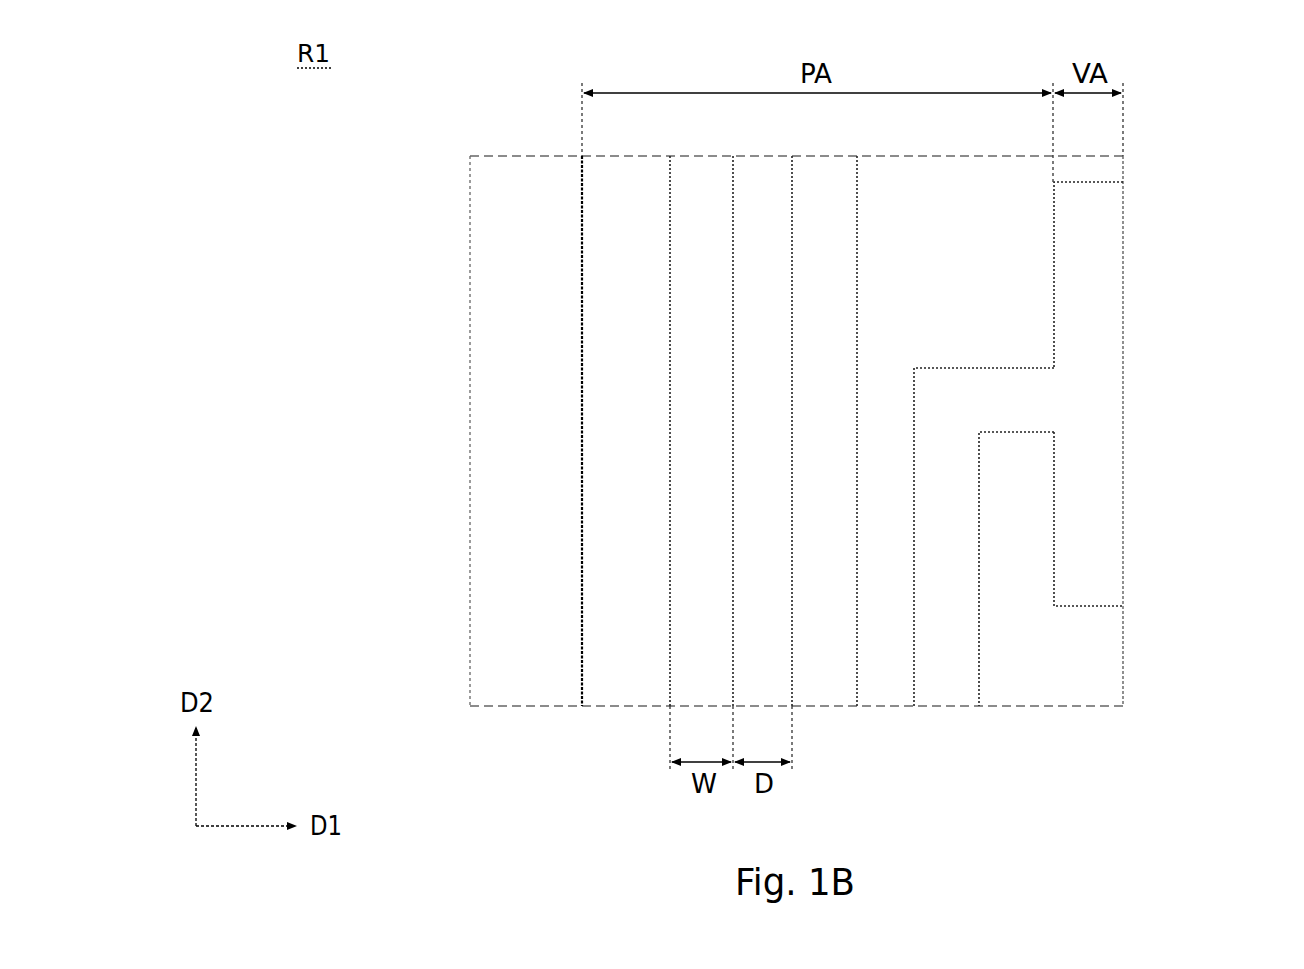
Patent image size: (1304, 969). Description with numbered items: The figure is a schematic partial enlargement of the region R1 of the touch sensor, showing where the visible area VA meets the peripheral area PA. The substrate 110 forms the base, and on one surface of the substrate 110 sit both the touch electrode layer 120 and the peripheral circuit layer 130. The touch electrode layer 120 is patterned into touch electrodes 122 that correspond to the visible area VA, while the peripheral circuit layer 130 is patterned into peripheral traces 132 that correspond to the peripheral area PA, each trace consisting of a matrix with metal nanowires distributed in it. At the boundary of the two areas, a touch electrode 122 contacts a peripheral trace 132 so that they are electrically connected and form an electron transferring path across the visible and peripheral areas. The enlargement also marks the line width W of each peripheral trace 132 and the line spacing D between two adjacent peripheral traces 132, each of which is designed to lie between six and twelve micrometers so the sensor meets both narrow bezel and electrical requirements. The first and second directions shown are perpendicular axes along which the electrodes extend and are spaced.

The substrate 110 is at (1112, 660).
The touch electrode layer 120 is at (1155, 394).
The touch electrode 122 is at (1112, 322).
The peripheral circuit layer 130 is at (974, 571).
The peripheral trace 132 is at (948, 706).